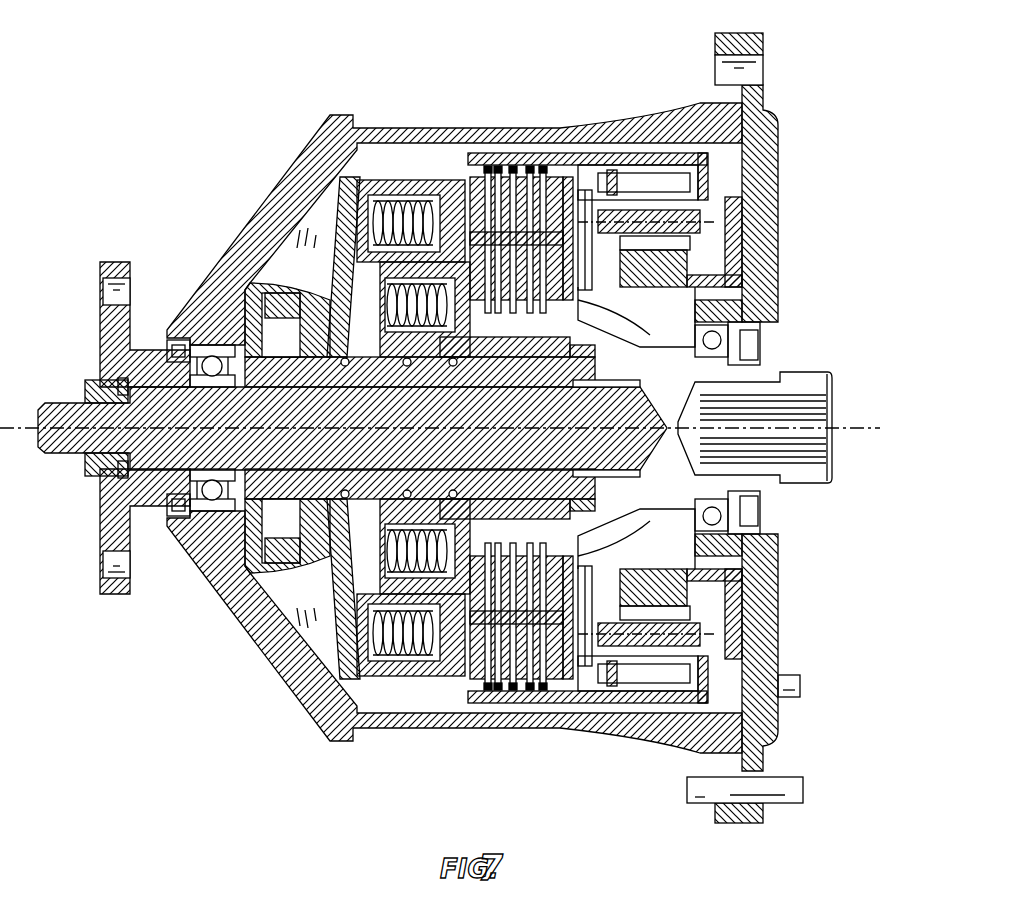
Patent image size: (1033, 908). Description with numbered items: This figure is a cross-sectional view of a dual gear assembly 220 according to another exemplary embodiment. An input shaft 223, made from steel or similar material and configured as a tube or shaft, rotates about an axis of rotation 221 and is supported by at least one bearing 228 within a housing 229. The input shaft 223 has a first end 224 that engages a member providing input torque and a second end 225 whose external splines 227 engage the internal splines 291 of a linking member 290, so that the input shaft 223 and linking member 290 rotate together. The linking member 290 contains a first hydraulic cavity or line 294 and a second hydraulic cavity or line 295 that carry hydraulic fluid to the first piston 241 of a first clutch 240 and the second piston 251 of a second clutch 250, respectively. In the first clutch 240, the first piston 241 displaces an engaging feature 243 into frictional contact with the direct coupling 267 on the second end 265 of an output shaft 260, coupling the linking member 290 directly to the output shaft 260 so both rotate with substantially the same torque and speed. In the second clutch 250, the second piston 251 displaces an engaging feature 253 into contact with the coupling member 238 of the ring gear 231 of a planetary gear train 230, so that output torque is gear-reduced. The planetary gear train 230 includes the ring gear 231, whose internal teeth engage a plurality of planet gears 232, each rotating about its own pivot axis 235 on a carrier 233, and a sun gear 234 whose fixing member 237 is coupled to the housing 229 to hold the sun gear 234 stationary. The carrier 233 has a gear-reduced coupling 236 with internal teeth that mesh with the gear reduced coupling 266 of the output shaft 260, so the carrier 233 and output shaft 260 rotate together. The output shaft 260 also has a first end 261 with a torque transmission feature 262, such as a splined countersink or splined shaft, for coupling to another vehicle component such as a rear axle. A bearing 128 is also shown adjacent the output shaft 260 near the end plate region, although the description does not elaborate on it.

The dual gear assembly 220 is at (150, 73).
The axis of rotation 221 is at (13, 432).
The input shaft 223 is at (296, 459).
The first end 224 is at (62, 408).
The second end 225 is at (592, 459).
The external splines 227 is at (545, 460).
The bearing 228 is at (83, 378).
The housing 229 is at (287, 198).
The planetary gear train (PGT) 230 is at (705, 186).
The ring gear 231 is at (662, 662).
The planet gears 232 is at (680, 243).
The carrier 233 is at (695, 275).
The sun gear 234 is at (815, 598).
The pivot axis 235 is at (660, 218).
The gear-reduced coupling 236 is at (620, 297).
The fixing member 237 is at (745, 632).
The coupling member 238 is at (545, 705).
The first clutch 240 is at (565, 253).
The first piston 241 is at (335, 575).
The engaging feature 243 is at (497, 550).
The second clutch 250 is at (488, 178).
The second piston 251 is at (392, 647).
The engaging feature 253 is at (525, 673).
The output shaft 260 is at (648, 497).
The first end 261 is at (753, 460).
The torque transmission feature 262 is at (824, 455).
The second end 265 is at (605, 517).
The gear reduced coupling 266 is at (620, 300).
The direct coupling 267 is at (565, 330).
The bearing 128 is at (712, 518).
The linking member 290 is at (290, 263).
The internal splines 291 is at (529, 380).
The first hydraulic cavity or line 294 is at (370, 510).
The second hydraulic cavity or line 295 is at (347, 563).